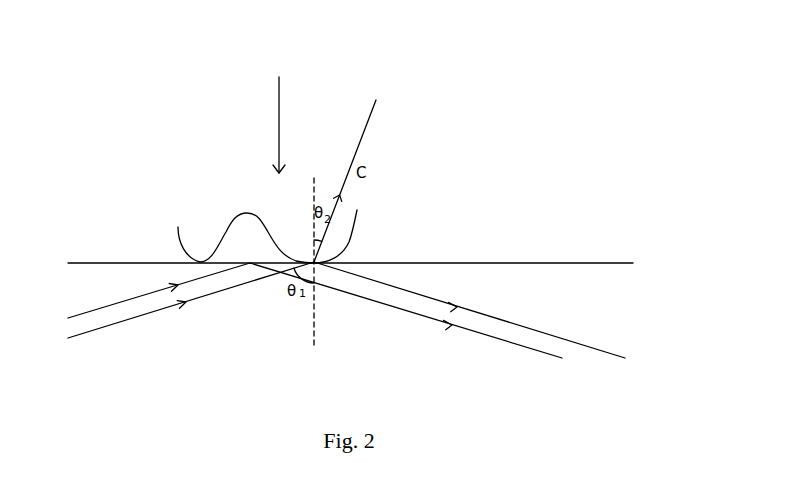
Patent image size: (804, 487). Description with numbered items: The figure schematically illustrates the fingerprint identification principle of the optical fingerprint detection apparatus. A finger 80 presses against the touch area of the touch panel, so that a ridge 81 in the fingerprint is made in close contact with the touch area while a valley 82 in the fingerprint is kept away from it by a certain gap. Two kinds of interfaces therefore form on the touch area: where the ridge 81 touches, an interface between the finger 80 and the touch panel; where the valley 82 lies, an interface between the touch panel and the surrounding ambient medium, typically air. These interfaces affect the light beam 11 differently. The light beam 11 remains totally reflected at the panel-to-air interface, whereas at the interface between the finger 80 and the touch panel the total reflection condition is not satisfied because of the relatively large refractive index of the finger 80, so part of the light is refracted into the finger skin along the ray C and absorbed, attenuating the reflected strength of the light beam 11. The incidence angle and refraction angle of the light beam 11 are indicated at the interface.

The finger 80 is at (280, 111).
The valley 82 is at (242, 213).
The ridge 81 is at (337, 243).
The light beam 11 is at (135, 310).